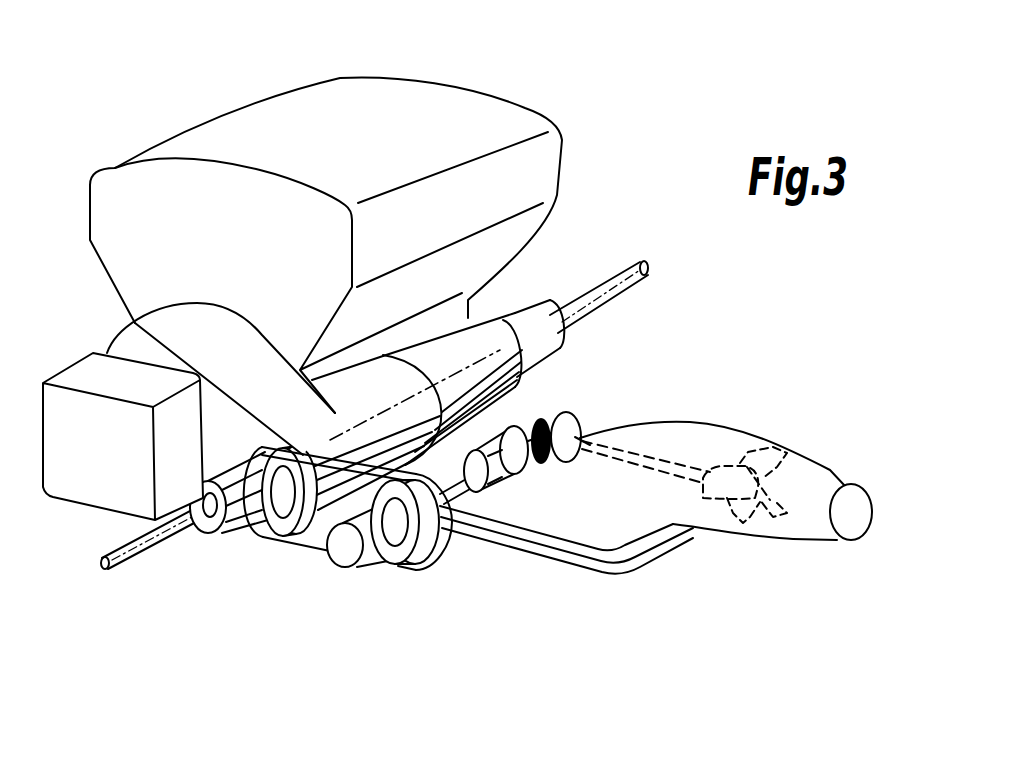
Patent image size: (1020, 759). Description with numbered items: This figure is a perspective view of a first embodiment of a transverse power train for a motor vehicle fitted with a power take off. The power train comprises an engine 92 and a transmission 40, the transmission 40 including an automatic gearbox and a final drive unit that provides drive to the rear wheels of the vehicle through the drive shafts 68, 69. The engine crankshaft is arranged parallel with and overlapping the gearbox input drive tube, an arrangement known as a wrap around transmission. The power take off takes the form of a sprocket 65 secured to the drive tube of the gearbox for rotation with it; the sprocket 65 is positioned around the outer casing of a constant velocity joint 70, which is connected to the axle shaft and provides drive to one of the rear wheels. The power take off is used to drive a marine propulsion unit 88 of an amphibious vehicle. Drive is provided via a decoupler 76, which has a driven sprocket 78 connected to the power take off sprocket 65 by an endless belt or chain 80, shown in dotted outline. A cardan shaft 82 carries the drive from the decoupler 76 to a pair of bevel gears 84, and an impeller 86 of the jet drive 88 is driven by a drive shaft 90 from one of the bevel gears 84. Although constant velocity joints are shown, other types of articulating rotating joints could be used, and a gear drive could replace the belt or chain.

The transmission 40 is at (481, 337).
The engine 92 is at (362, 93).
The drive shaft 69 is at (623, 283).
The drive shaft 68 is at (147, 555).
The constant velocity joint 70 is at (220, 527).
The sprocket 65 is at (270, 520).
The endless belt or chain 80 is at (307, 540).
The decoupler 76 is at (347, 557).
The driven sprocket 78 is at (398, 562).
The cardan shaft 82 is at (473, 485).
The bevel gears 84 is at (580, 427).
The marine propulsion unit 88 is at (643, 507).
The drive shaft 90 is at (667, 458).
The impeller 86 is at (767, 460).